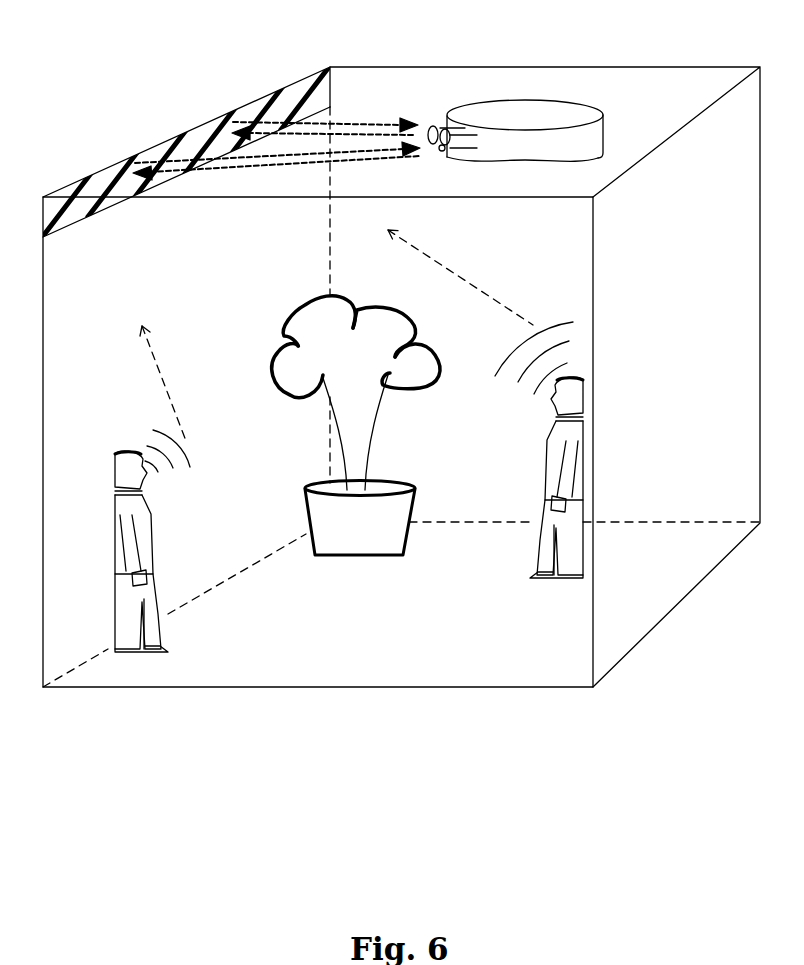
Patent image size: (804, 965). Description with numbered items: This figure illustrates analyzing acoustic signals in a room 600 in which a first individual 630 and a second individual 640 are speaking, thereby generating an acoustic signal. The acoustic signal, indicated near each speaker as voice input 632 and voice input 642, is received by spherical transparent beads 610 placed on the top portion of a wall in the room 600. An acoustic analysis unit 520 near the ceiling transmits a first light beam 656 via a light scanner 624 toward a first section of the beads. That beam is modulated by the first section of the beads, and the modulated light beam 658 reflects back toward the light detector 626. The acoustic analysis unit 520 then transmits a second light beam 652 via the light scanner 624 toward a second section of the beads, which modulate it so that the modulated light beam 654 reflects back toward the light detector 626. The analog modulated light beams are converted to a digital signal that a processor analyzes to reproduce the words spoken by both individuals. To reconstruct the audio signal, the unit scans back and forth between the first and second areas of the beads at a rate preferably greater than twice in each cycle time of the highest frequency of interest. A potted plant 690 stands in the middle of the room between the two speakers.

The room 600 is at (328, 66).
The spherical transparent beads 610 is at (193, 150).
The electronic device 520 is at (570, 115).
The light scanner 624 is at (432, 130).
The light detector 626 is at (438, 150).
The first individual 630 is at (583, 552).
The voice input 632 is at (470, 285).
The second individual 640 is at (151, 637).
The voice input 642 is at (158, 361).
The second light beam 652 is at (372, 136).
The modulated light beam 654 is at (342, 124).
The first light beam 656 is at (293, 165).
The modulated light beam 658 is at (240, 158).
The plant 690 is at (353, 532).